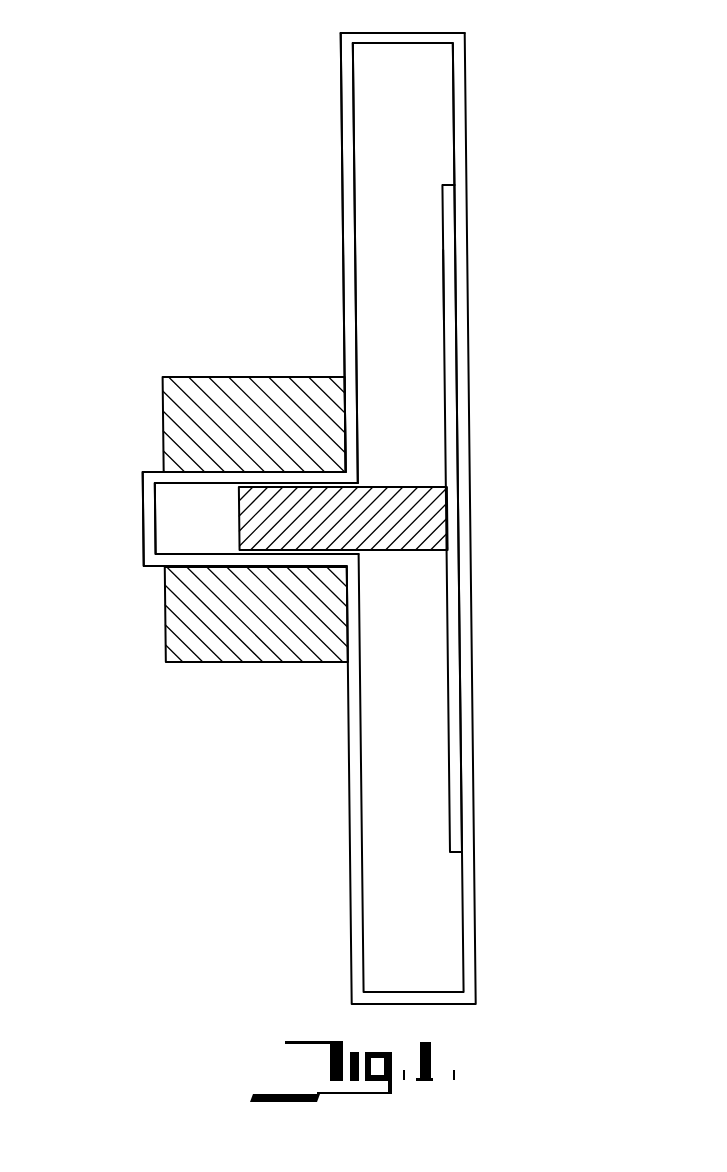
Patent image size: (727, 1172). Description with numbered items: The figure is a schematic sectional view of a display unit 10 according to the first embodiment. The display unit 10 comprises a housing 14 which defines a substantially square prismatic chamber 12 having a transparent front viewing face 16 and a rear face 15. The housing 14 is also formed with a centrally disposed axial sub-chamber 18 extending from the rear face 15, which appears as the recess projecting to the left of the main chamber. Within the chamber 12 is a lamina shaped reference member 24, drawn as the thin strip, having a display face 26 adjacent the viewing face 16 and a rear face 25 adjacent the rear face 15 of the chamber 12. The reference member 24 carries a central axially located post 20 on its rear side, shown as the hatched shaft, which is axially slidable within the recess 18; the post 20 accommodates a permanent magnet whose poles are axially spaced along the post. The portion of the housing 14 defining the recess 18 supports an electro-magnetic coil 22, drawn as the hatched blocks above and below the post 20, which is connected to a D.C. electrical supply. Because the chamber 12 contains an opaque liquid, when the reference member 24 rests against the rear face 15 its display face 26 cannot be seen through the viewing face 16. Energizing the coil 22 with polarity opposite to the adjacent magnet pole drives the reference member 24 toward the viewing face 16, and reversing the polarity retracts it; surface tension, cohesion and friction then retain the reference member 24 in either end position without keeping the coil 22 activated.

The display unit 10 is at (523, 45).
The chamber 12 is at (430, 112).
The housing 14 is at (405, 27).
The rear face 15 is at (346, 196).
The viewing face 16 is at (458, 161).
The axial sub-chamber 18 is at (178, 507).
The post 20 is at (271, 520).
The electro-magnetic coil 22 is at (227, 647).
The reference member 24 is at (450, 387).
The rear face of reference member 25 is at (441, 294).
The display face 26 is at (457, 338).